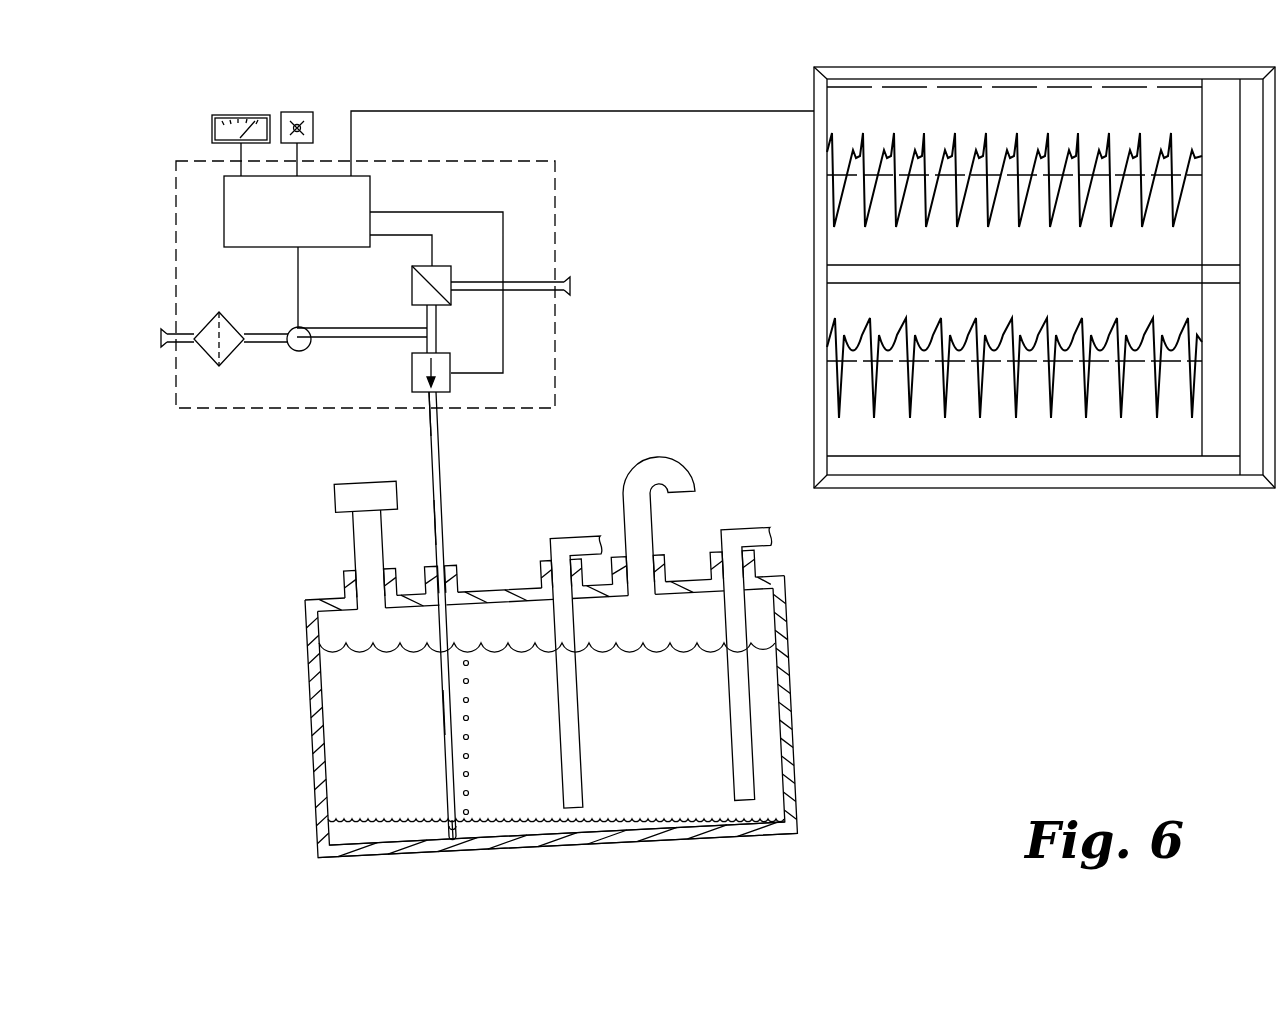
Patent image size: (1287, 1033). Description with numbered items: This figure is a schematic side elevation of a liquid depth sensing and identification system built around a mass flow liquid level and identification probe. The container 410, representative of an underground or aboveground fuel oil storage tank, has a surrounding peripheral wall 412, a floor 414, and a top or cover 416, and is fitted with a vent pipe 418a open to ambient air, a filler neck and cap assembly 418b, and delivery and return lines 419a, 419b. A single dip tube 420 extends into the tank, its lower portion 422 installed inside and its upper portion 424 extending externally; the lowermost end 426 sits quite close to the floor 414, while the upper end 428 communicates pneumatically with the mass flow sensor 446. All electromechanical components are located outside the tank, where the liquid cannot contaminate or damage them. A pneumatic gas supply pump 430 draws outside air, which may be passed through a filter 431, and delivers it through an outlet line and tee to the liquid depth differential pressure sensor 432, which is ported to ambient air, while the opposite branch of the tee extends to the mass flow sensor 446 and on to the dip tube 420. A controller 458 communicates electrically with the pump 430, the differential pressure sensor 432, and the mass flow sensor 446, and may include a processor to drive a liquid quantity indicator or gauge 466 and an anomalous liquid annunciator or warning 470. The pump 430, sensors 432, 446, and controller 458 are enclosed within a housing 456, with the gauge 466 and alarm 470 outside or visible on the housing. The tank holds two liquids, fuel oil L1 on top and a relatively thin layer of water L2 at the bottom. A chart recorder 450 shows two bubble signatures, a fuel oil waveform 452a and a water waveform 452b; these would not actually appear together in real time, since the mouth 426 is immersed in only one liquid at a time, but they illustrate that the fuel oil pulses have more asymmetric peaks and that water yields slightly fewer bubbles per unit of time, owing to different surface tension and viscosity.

The container 410 is at (842, 687).
The surrounding peripheral wall 412 is at (308, 726).
The floor 414 is at (687, 843).
The top or cover 416 is at (486, 590).
The vent pipe 418a is at (663, 457).
The filler neck and cap assembly 418b is at (355, 538).
The delivery line 419a is at (568, 537).
The return line 419b is at (740, 527).
The dip tube 420 is at (443, 525).
The lower portion 422 is at (442, 712).
The upper portion 424 is at (438, 424).
The lowermost end 426 is at (448, 834).
The upper end 428 is at (426, 401).
The pneumatic gas supply pump 430 is at (291, 330).
The filter 431 is at (236, 352).
The liquid depth differential pressure sensor 432 is at (412, 282).
The mass flow sensor 446 is at (412, 373).
The chart recorder 450 is at (1097, 488).
The fuel oil waveform 452a is at (827, 152).
The water waveform 452b is at (827, 340).
The housing 456 is at (556, 222).
The controller 458 is at (320, 223).
The liquid quantity indicator or gauge 466 is at (239, 117).
The anomalous liquid annunciator or warning 470 is at (308, 112).
The fuel oil L1 is at (350, 765).
The water L2 is at (340, 838).